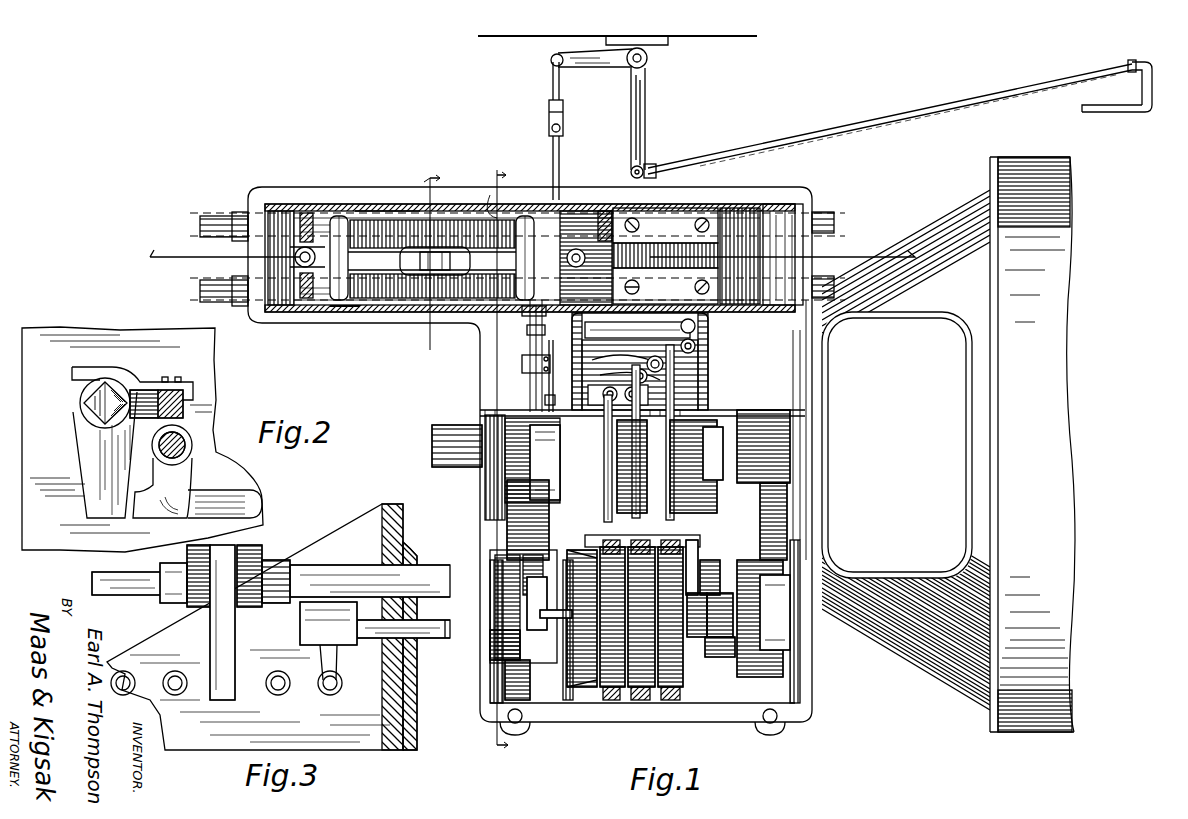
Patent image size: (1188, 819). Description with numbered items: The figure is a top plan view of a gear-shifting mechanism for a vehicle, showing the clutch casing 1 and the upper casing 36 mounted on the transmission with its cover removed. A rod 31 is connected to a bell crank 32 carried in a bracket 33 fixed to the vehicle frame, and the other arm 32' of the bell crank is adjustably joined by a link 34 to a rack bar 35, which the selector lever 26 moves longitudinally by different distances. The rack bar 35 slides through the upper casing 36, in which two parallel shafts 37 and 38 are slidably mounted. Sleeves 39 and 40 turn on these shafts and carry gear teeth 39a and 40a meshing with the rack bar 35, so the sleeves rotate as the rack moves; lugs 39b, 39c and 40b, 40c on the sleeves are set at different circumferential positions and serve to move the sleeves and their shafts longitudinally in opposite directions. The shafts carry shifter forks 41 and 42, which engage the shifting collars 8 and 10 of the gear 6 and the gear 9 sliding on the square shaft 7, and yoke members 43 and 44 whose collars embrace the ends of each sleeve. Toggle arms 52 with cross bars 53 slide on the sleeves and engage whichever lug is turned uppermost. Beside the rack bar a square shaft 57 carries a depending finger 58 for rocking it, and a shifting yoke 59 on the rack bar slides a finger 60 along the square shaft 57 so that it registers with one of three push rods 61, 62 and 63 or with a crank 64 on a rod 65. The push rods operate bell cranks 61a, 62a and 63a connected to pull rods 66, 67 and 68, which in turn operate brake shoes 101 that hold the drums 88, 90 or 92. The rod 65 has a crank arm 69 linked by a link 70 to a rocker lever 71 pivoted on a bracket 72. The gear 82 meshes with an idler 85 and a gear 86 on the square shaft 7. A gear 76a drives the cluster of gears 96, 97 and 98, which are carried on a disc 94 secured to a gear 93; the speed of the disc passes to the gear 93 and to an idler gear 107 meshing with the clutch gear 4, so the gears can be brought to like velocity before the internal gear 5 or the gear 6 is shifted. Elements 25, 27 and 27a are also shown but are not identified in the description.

In FIG. 1, the clutch casing 1 is at (935, 656).
In FIG. 1, the clutch gear 4 is at (534, 380).
In FIG. 1, the internal gear 5 is at (712, 438).
In FIG. 1, the gear for intermediate drive 6 is at (665, 505).
In FIG. 1, the square shaft 7 is at (442, 430).
In FIG. 1, the shifting collar 8 is at (654, 490).
In FIG. 1, the gear 9 is at (440, 262).
In FIG. 1, the shifting collar 10 is at (514, 462).
In FIG. 1, the joint 25 is at (556, 140).
In FIG. 1, the selector lever 26 is at (582, 198).
In FIG. 1, the rod end 27 is at (1090, 114).
In FIG. 1, the hook 27a is at (1142, 98).
In FIG. 1, the rod 31 is at (916, 110).
In FIG. 1, the bell crank 32 is at (662, 123).
In FIG. 1, the arm of bell crank 32' is at (591, 75).
In FIG. 1, the bracket 33 is at (652, 58).
In FIG. 1, the link 34 is at (553, 88).
In FIG. 1, the rack bar 35 is at (553, 440).
In FIG. 3, the rack bar 35 is at (345, 576).
In FIG. 1, the upper casing 36 is at (480, 376).
In FIG. 1, the shaft 37 is at (200, 225).
In FIG. 1, the shaft 38 is at (200, 296).
In FIG. 1, the sleeve 39 is at (534, 243).
In FIG. 1, the gear teeth 39a is at (586, 258).
In FIG. 1, the operating lug 39b is at (360, 210).
In FIG. 1, the operating lug 39c is at (490, 195).
In FIG. 1, the sleeve 40 is at (410, 318).
In FIG. 1, the gear teeth 40a is at (585, 259).
In FIG. 1, the lug 40b is at (546, 316).
In FIG. 1, the lug 40c is at (348, 316).
In FIG. 1, the shifter fork 41 is at (668, 246).
In FIG. 1, the shifter fork 42 is at (665, 286).
In FIG. 1, the yoke member 43 is at (302, 212).
In FIG. 1, the yoke member 44 is at (300, 272).
In FIG. 1, the toggle arms 52 is at (365, 278).
In FIG. 1, the cross bars 53 is at (348, 234).
In FIG. 1, the square shaft 57 is at (530, 336).
In FIG. 2, the square shaft 57 is at (82, 403).
In FIG. 3, the square shaft 57 is at (298, 576).
In FIG. 1, the finger 58 is at (505, 280).
In FIG. 1, the shifting yoke 59 is at (527, 340).
In FIG. 2, the shifting yoke 59 is at (148, 386).
In FIG. 3, the shifting yoke 59 is at (262, 554).
In FIG. 1, the finger 60 is at (522, 364).
In FIG. 2, the finger 60 is at (85, 444).
In FIG. 3, the finger 60 is at (220, 637).
In FIG. 1, the push rod 61 is at (700, 328).
In FIG. 3, the push rod 61 is at (130, 680).
In FIG. 1, the bell crank 61a is at (696, 346).
In FIG. 1, the push rod 62 is at (621, 374).
In FIG. 3, the push rod 62 is at (178, 694).
In FIG. 1, the bell crank 62a is at (631, 369).
In FIG. 1, the push rod 63 is at (618, 395).
In FIG. 2, the push rod 63 is at (226, 500).
In FIG. 3, the push rod 63 is at (275, 696).
In FIG. 1, the bell crank 63a is at (648, 376).
In FIG. 1, the crank 64 is at (547, 385).
In FIG. 2, the crank 64 is at (180, 480).
In FIG. 3, the crank 64 is at (342, 694).
In FIG. 1, the rod 65 is at (553, 490).
In FIG. 2, the rod 65 is at (190, 447).
In FIG. 3, the rod 65 is at (355, 646).
In FIG. 1, the pull rod 66 is at (676, 518).
In FIG. 1, the pull rod 67 is at (640, 497).
In FIG. 1, the pull rod 68 is at (618, 510).
In FIG. 1, the crank arm 69 is at (572, 618).
In FIG. 1, the link 70 is at (547, 607).
In FIG. 1, the rocker lever 71 is at (490, 638).
In FIG. 1, the bracket 72 is at (492, 605).
In FIG. 1, the gear 76a is at (728, 660).
In FIG. 1, the gear 82 is at (505, 665).
In FIG. 1, the idler 85 is at (500, 520).
In FIG. 1, the gear 86 is at (500, 470).
In FIG. 1, the drum 88 is at (612, 617).
In FIG. 1, the drum 90 is at (641, 617).
In FIG. 1, the drum 92 is at (670, 617).
In FIG. 1, the gear 93 is at (765, 623).
In FIG. 1, the disc 94 is at (775, 645).
In FIG. 1, the gear 96 is at (718, 638).
In FIG. 1, the gear 97 is at (708, 572).
In FIG. 1, the gear 98 is at (698, 640).
In FIG. 1, the brake shoes 101 is at (615, 700).
In FIG. 1, the idler gear 107 is at (760, 518).